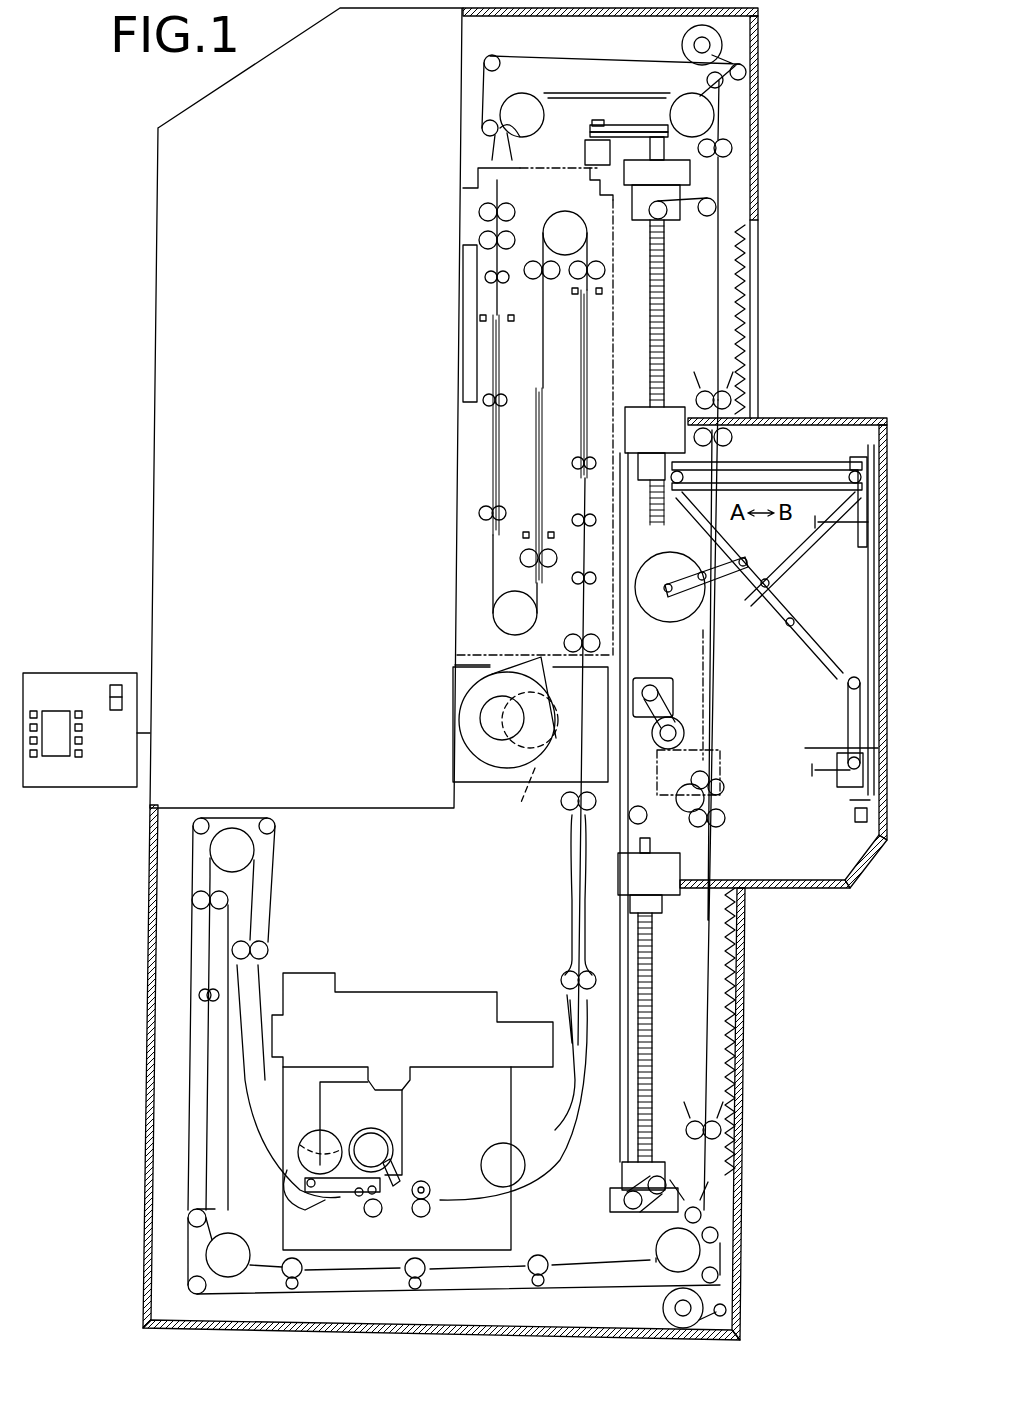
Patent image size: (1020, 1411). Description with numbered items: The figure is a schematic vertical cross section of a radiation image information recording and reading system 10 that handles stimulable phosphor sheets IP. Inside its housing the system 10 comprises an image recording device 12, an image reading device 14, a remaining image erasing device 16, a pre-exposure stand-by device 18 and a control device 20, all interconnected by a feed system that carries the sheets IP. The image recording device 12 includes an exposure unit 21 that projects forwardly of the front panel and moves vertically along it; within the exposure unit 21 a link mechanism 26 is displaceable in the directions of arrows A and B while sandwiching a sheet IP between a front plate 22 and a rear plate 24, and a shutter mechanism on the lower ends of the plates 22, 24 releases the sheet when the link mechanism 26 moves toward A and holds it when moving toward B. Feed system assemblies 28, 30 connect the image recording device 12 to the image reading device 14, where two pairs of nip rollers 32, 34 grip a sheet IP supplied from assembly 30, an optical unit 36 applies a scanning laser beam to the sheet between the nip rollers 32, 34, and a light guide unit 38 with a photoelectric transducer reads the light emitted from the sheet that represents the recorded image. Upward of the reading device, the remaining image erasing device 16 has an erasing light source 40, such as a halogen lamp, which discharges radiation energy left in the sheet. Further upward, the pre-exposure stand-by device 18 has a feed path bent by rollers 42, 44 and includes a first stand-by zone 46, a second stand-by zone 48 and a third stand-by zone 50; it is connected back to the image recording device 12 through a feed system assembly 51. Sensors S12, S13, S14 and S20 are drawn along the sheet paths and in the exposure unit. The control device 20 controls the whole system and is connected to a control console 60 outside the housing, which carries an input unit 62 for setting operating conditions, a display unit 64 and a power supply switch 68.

The radiation image information recording and reading system 10 is at (775, 61).
The image recording device 12 is at (832, 413).
The image reading device 14 is at (435, 977).
The remaining image erasing device 16 is at (457, 726).
The pre-exposure stand-by device 18 is at (461, 449).
The control device 20 is at (330, 531).
The exposure unit 21 is at (788, 418).
The front plate 22 is at (880, 703).
The rear plate 24 is at (880, 622).
The link mechanism 26 is at (846, 589).
The feed system assembly 28 is at (458, 1292).
The feed system assembly 30 is at (185, 972).
The nip rollers 32 is at (368, 1218).
The nip rollers 34 is at (426, 1215).
The optical unit 36 is at (390, 1010).
The light guide unit 38 is at (378, 1145).
The erasing light source 40 is at (525, 790).
The roller 42 is at (567, 224).
The roller 44 is at (500, 620).
The first stand-by zone 46 is at (600, 407).
The second stand-by zone 48 is at (557, 406).
The third stand-by zone 50 is at (511, 417).
The feed system assembly 51 is at (568, 58).
The control console 60 is at (79, 665).
The input unit 62 is at (79, 757).
The display unit 64 is at (56, 725).
The power supply switch 68 is at (114, 685).
The stimulable phosphor sheet IP is at (582, 345).
The sensor S12 is at (573, 290).
The sensor S13 is at (526, 530).
The sensor S14 is at (522, 308).
The sensor S20 is at (855, 815).